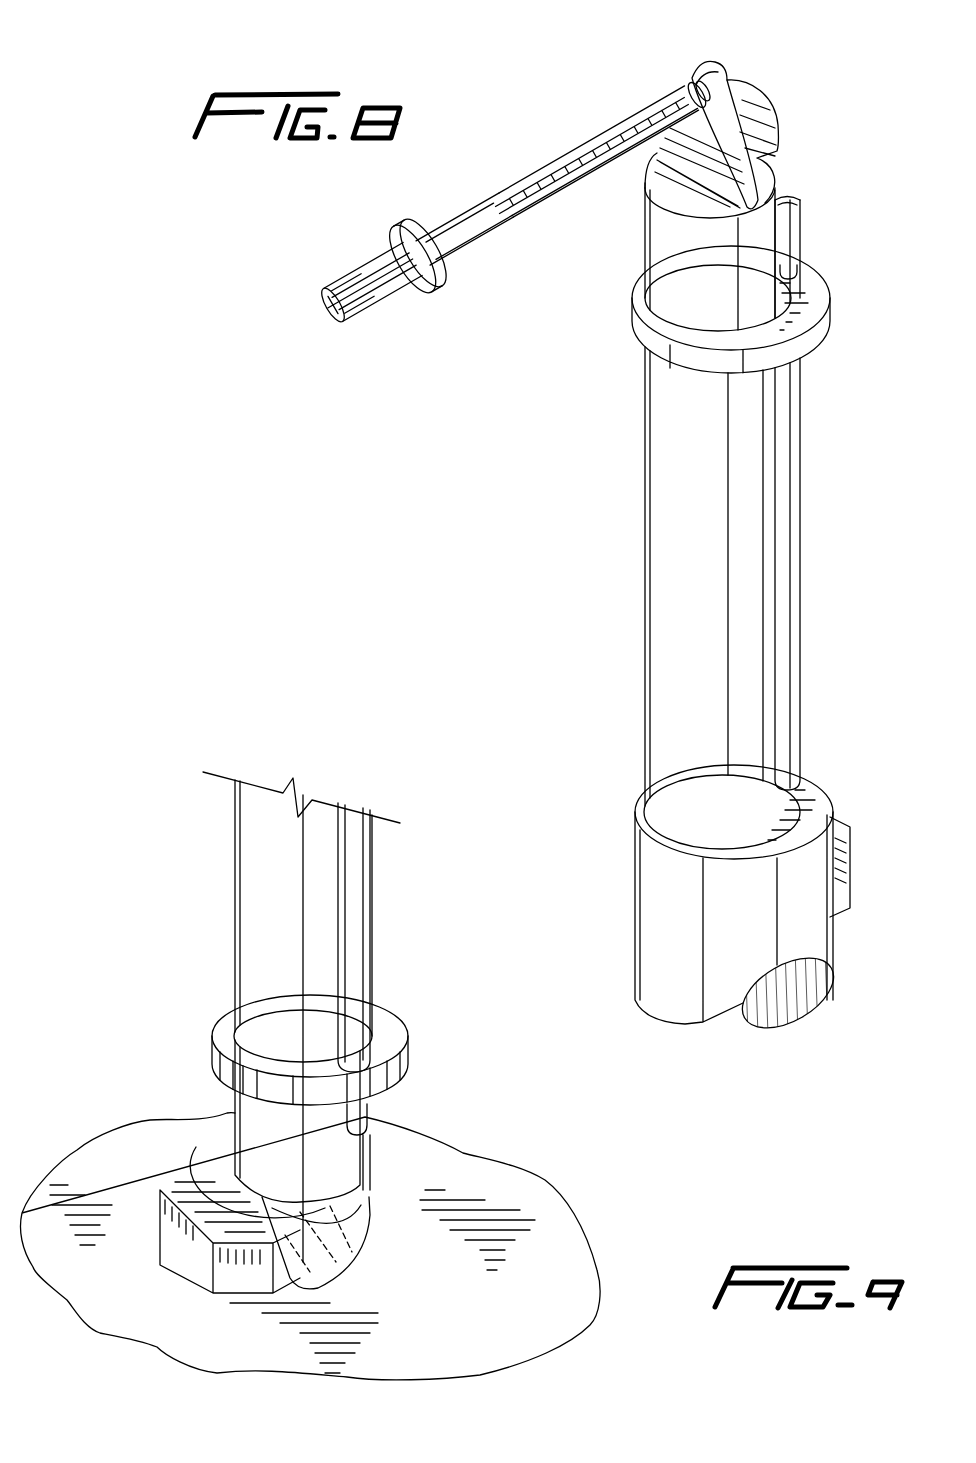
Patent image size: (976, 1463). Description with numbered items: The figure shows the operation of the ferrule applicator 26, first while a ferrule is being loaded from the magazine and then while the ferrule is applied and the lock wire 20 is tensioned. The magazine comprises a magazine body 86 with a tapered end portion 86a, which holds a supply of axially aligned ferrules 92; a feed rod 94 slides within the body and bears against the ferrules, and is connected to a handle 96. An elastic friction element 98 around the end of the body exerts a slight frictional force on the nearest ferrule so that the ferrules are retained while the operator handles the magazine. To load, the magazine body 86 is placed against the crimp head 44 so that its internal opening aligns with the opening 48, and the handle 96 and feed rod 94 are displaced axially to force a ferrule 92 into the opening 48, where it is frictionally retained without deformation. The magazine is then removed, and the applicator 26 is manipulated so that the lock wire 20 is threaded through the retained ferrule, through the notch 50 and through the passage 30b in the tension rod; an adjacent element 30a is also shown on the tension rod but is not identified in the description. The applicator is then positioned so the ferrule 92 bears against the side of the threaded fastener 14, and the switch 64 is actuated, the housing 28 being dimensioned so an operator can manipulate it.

In FIG. 9, the threaded fastener 14 is at (190, 1258).
In FIG. 9, the lock wire 20 is at (371, 1118).
In FIG. 8, the applicator 26 is at (638, 515).
In FIG. 8, the housing 28 is at (665, 692).
In FIG. 9, the housing 28 is at (240, 906).
In FIG. 8, the channel 30a is at (797, 230).
In FIG. 9, the channel 30a is at (370, 1117).
In FIG. 8, the passage 30b is at (780, 200).
In FIG. 8, the crimp head 44 is at (670, 240).
In FIG. 9, the crimp head 44 is at (253, 1115).
In FIG. 8, the opening 48 is at (722, 72).
In FIG. 8, the notch 50 is at (740, 78).
In FIG. 9, the notch 50 is at (363, 1227).
In FIG. 8, the switch 64 is at (850, 857).
In FIG. 8, the magazine body 86 is at (353, 267).
In FIG. 8, the tapered end portion 86a is at (662, 102).
In FIG. 8, the ferrule 92 is at (563, 177).
In FIG. 8, the feed rod 94 is at (480, 223).
In FIG. 8, the handle 96 is at (410, 232).
In FIG. 8, the elastic friction element 98 is at (686, 84).